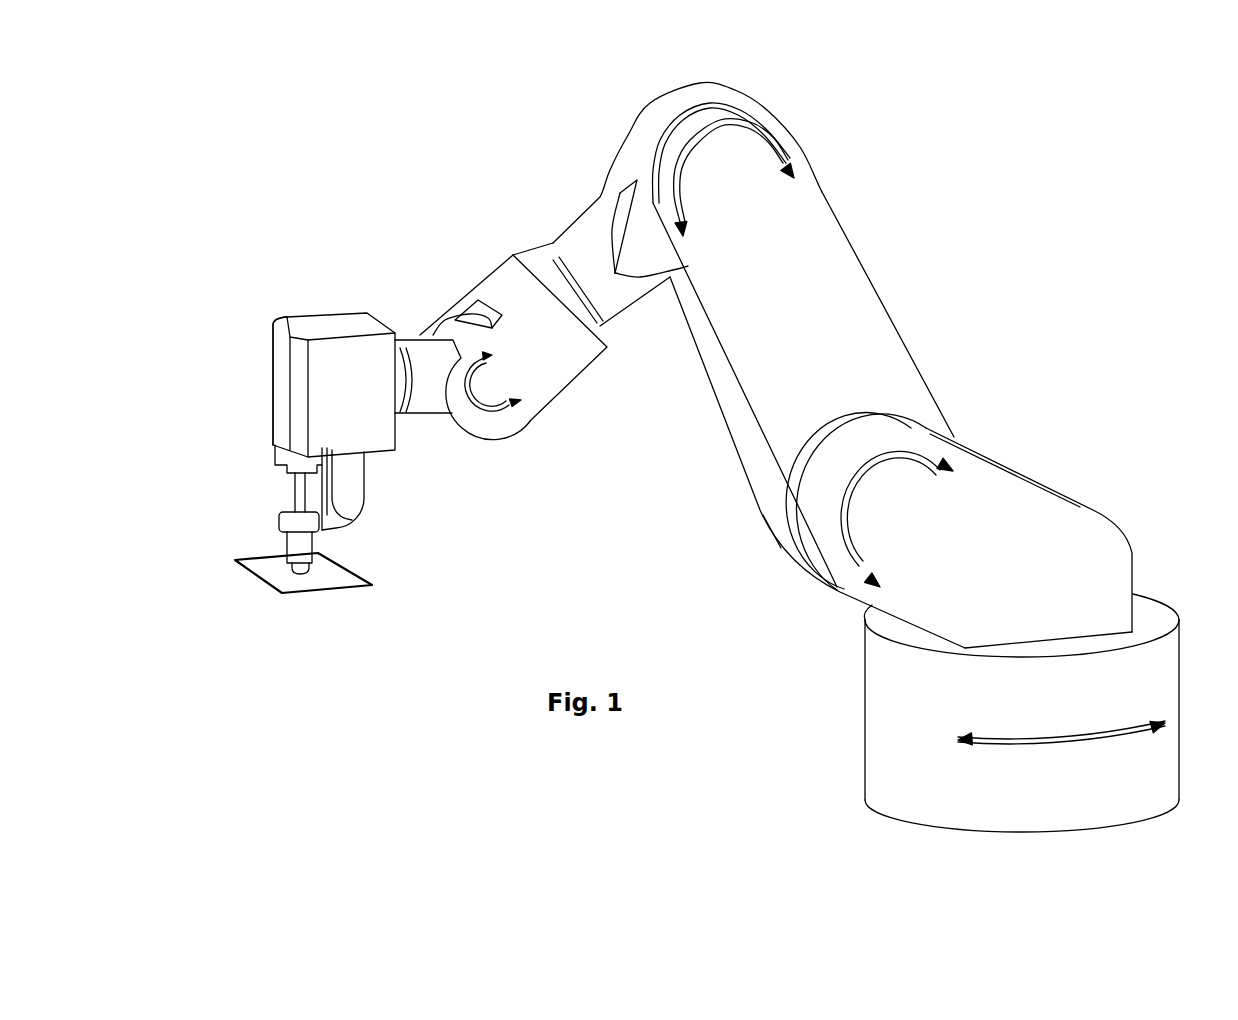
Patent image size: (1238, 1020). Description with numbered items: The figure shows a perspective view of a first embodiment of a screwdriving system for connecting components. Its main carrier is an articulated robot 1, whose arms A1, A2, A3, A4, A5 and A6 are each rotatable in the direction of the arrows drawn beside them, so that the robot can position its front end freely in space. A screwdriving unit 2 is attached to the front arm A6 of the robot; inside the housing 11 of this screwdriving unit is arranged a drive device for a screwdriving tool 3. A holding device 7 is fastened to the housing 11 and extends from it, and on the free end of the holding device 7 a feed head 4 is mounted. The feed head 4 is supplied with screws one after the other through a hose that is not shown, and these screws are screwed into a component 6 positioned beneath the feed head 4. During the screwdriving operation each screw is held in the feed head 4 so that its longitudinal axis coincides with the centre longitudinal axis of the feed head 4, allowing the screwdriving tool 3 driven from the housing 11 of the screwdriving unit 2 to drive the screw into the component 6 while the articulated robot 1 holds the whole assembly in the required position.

The articulated robot 1 is at (814, 437).
The screwdriving unit 2 is at (276, 247).
The screwdriving tool 3 is at (288, 492).
The feed head 4 is at (284, 549).
The component 6 is at (257, 580).
The holding device 7 is at (353, 500).
The housing 11 is at (283, 317).
The arm A1 is at (1021, 713).
The arm A2 is at (959, 530).
The arm A3 is at (687, 162).
The arm A4 is at (600, 253).
The arm A5 is at (501, 347).
The front arm A6 is at (424, 380).